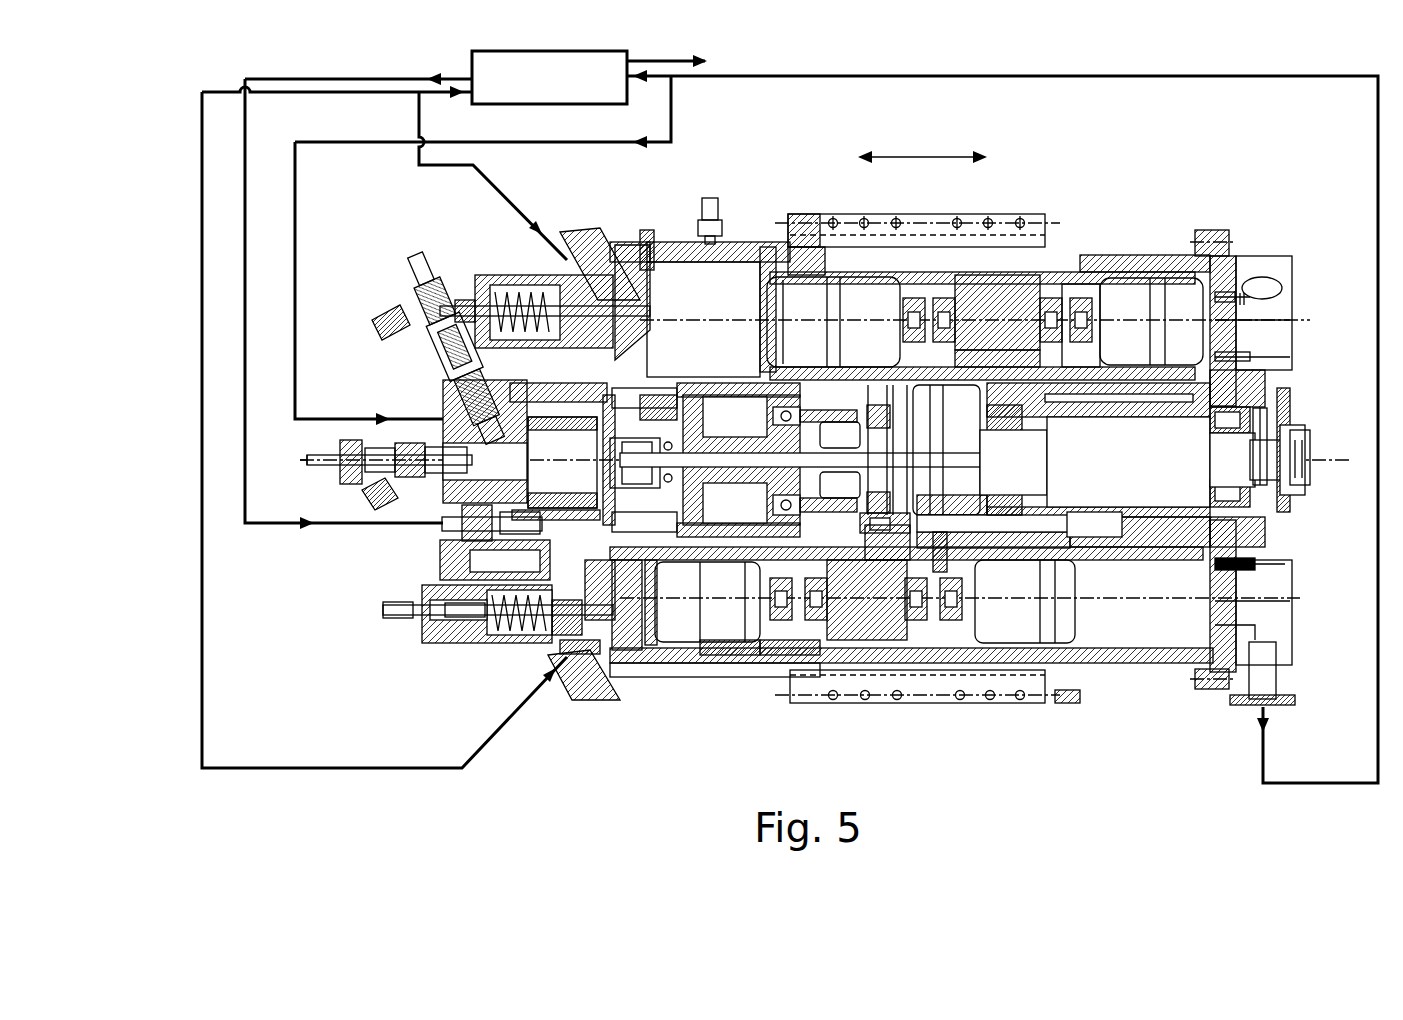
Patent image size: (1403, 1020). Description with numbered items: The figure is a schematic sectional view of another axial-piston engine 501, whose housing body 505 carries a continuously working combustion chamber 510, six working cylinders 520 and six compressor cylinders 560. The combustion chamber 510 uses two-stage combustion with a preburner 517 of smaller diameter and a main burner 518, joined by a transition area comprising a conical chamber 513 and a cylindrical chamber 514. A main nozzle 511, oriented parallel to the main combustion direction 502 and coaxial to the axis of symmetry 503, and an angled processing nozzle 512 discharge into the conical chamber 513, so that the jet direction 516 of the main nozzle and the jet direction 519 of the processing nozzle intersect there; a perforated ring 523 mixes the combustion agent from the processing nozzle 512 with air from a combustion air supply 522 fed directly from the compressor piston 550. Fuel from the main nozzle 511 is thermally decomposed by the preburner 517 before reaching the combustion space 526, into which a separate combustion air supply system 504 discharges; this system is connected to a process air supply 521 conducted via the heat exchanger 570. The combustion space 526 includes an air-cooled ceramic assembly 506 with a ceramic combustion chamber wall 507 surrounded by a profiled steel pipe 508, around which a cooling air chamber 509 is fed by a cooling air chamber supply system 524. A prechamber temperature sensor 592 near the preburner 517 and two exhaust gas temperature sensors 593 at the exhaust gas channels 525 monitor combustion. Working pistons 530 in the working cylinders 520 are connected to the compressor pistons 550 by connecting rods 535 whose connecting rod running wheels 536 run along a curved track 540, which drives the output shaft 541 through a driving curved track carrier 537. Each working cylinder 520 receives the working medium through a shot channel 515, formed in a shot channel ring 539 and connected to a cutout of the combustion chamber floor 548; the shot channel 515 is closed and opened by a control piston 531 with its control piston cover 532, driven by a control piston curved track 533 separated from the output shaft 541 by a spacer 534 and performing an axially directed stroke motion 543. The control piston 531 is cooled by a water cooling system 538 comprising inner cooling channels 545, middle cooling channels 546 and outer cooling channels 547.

The axial-piston engine 501 is at (1182, 182).
The main combustion direction 502 is at (585, 460).
The axis of symmetry 503 is at (370, 470).
The separate combustion air supply system 504 is at (380, 625).
The housing body 505 is at (920, 224).
The ceramic assembly 506 is at (500, 300).
The ceramic combustion chamber wall 507 is at (526, 282).
The profiled steel pipe 508 is at (640, 290).
The cooling air chamber 509 is at (510, 630).
The combustion chamber 510 is at (392, 540).
The main nozzle 511 is at (470, 440).
The processing nozzle 512 is at (465, 330).
The conical chamber 513 is at (440, 405).
The cylindrical chamber 514 is at (468, 525).
The shot channel 515 is at (658, 372).
The jet direction of the main nozzle 516 is at (305, 460).
The preburner 517 is at (368, 330).
The main burner 518 is at (372, 492).
The jet direction of the processing nozzle 519 is at (405, 238).
The working cylinder 520 is at (720, 290).
The process air supply 521 is at (396, 614).
The combustion air supply 522 is at (482, 330).
The perforated ring 523 is at (400, 360).
The cooling air chamber supply system 524 is at (580, 655).
The exhaust gas channel 525 is at (592, 622).
The combustion space 526 is at (470, 618).
The working piston 530 is at (838, 276).
The control piston 531 is at (700, 645).
The control piston cover 532 is at (626, 652).
The control piston curved track 533 is at (822, 648).
The spacer 534 is at (756, 340).
The connecting rod 535 is at (950, 285).
The connecting rod running wheel 536 is at (1068, 300).
The driving curved track carrier 537 is at (886, 600).
The water cooling system 538 is at (698, 745).
The shot channel ring 539 is at (650, 258).
The curved track 540 is at (1000, 322).
The output shaft 541 is at (1208, 456).
The stroke motion 543 is at (930, 150).
The inner cooling channel 545 is at (650, 652).
The middle cooling channel 546 is at (760, 655).
The outer cooling channel 547 is at (718, 672).
The combustion chamber floor 548 is at (560, 640).
The compressor piston 550 is at (1106, 320).
The compressor cylinder 560 is at (1145, 630).
The heat exchanger 570 is at (472, 72).
The prechamber temperature sensor 592 is at (455, 400).
The exhaust gas temperature sensor 593 is at (590, 262).